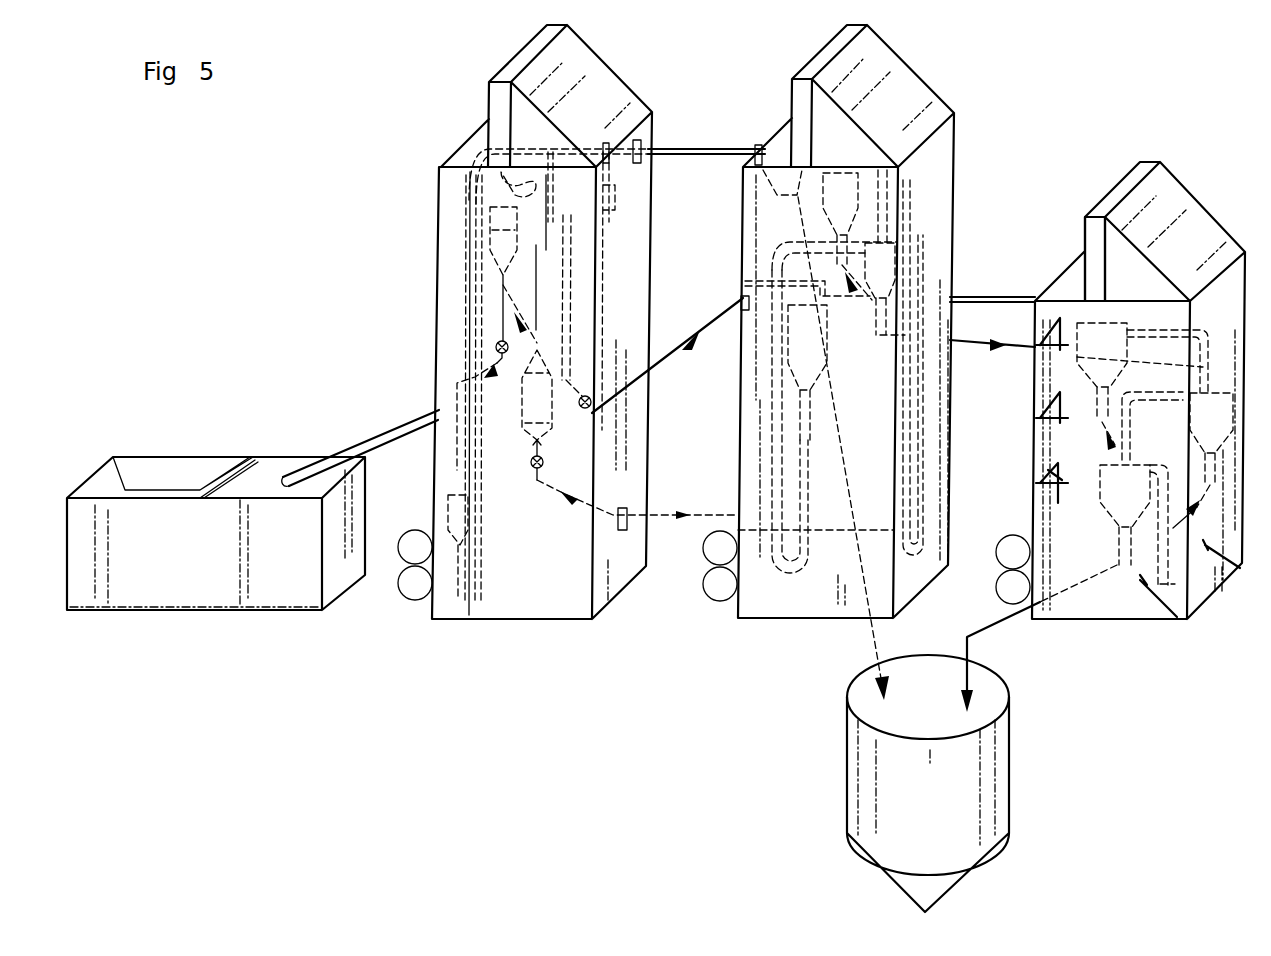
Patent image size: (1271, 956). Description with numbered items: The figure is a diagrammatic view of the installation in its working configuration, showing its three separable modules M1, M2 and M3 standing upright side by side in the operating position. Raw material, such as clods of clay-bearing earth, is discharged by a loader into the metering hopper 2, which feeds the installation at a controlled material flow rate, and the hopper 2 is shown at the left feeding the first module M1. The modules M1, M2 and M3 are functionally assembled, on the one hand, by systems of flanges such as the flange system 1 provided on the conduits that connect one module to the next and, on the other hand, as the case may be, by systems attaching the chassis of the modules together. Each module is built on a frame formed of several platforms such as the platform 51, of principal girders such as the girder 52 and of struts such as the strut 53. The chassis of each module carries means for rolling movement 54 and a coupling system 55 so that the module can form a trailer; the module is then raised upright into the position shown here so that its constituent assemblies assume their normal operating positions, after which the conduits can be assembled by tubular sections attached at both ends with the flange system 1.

The system of flanges 1 is at (653, 128).
The metering hopper 2 is at (150, 593).
The module M1 is at (514, 662).
The module M2 is at (823, 648).
The module M3 is at (1092, 460).
The platform 51 is at (1041, 500).
The principle girder 52 is at (1036, 460).
The strut 53 is at (1136, 618).
The means for rolling movement 54 is at (1002, 589).
The coupling system 55 is at (1086, 242).